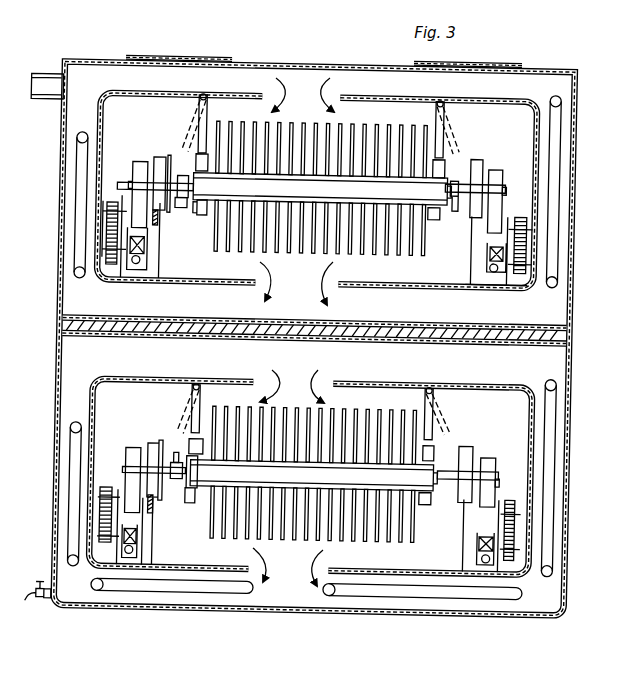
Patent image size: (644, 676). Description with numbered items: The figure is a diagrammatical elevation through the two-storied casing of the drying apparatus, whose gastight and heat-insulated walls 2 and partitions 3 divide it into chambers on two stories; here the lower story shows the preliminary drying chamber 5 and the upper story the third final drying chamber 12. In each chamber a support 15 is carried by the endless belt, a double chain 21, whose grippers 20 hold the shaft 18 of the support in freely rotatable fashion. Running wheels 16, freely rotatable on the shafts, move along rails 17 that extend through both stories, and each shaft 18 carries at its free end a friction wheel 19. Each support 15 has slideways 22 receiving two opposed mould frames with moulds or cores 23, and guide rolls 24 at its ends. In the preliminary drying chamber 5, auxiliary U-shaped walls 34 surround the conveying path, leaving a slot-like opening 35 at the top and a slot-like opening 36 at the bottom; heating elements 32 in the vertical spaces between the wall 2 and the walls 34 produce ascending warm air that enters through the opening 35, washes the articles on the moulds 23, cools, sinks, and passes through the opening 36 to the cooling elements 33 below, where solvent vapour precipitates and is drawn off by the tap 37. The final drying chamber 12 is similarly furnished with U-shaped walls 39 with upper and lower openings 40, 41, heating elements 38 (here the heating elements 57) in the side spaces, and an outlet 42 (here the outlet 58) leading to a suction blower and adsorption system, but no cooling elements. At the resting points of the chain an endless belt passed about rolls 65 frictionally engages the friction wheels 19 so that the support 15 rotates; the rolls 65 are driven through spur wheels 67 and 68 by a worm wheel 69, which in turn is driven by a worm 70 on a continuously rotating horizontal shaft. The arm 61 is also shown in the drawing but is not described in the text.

The walls 2 is at (578, 113).
The partitions 3 is at (481, 338).
The preliminary drying chamber 5 is at (73, 362).
The third final drying chamber 12 is at (498, 78).
The supports 15 is at (441, 180).
The running wheels 16 is at (483, 166).
The rails 17 is at (163, 261).
The shaft 18 is at (171, 160).
The friction wheels 19 is at (137, 162).
The grippers 20 is at (184, 172).
The double chain 21 is at (186, 201).
The slideways 22 is at (372, 174).
The moulds or cores 23 is at (362, 131).
The guide rolls 24 is at (447, 158).
The heating elements 32 is at (68, 560).
The cooling elements 33 is at (97, 590).
The U-shaped walls 34 is at (88, 390).
The upper slot-like opening 35 is at (292, 386).
The lower slot-like opening 36 is at (288, 567).
The tap 37 is at (38, 604).
The heating elements 38 is at (78, 138).
The U-shaped walls 39 is at (110, 95).
The upper slot-like opening 40 is at (303, 95).
The lower slot-like opening 41 is at (296, 283).
The outlet 42 is at (42, 108).
The heating elements 57 is at (556, 282).
The outlet 58 is at (43, 93).
The arm 61 is at (205, 145).
The rolls 65 is at (145, 227).
The spur wheel 67 is at (502, 218).
The spur wheel 68 is at (528, 242).
The worm wheel 69 is at (491, 257).
The worm 70 is at (497, 280).